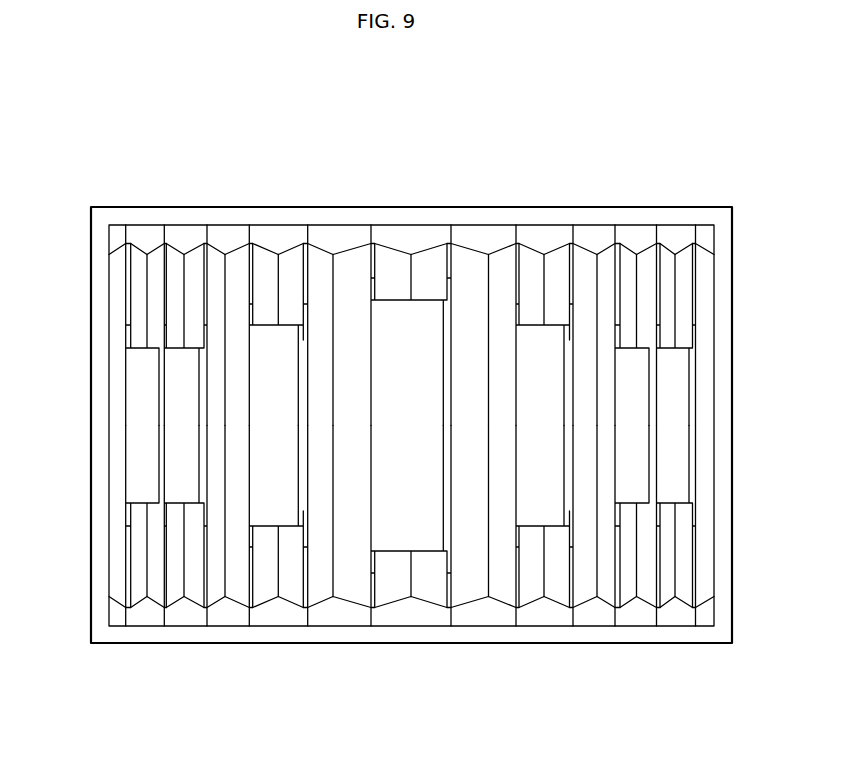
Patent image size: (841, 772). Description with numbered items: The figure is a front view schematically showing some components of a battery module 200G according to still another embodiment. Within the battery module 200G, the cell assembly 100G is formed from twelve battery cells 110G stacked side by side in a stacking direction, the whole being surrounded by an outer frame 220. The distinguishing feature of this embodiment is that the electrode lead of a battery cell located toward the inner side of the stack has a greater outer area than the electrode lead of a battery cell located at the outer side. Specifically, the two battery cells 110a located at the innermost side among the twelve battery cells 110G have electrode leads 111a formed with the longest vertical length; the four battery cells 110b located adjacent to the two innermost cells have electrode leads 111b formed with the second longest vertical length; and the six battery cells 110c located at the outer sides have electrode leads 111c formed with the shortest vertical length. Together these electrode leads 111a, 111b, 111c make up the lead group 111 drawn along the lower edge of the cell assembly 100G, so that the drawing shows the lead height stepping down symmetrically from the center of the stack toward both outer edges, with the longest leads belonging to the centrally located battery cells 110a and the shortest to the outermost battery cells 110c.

The battery module 200G is at (177, 90).
The housing / frame 220 is at (120, 199).
The cell assembly 100G is at (113, 236).
The battery cells 110G is at (673, 155).
The battery cells located at the innermost side 110a is at (435, 243).
The battery cells located adjacent to the innermost cells 110b is at (293, 240).
The battery cells located at the outer sides 110c is at (196, 246).
The driving circuit group 111 is at (148, 698).
The electrode leads of the innermost battery cells 111a is at (446, 542).
The electrode leads of the adjacent battery cells 111b is at (302, 518).
The electrode leads of the outer battery cells 111c is at (202, 495).